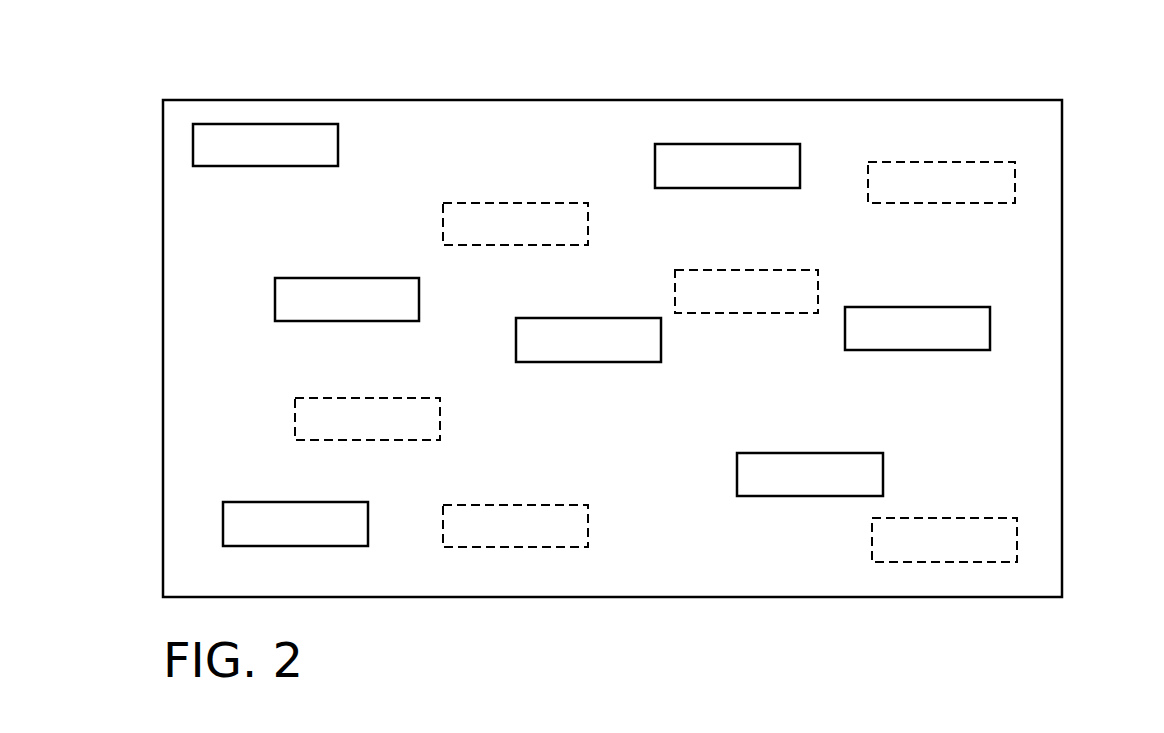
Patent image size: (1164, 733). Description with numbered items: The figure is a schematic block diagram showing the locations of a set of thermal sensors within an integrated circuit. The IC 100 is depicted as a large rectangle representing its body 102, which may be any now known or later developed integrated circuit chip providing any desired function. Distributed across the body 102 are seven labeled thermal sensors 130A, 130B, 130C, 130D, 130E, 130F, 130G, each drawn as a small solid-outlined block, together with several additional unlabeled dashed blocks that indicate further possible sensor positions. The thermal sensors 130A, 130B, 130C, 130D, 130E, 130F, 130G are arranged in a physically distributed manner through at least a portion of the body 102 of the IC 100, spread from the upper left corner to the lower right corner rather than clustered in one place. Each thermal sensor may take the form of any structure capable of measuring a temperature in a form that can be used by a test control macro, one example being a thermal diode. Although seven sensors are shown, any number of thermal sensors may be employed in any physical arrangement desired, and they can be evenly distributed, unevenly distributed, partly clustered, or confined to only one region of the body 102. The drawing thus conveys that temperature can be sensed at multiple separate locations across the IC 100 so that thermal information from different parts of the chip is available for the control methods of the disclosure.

The IC 100 is at (1072, 100).
The body 102 is at (1026, 145).
The thermal sensor 130A is at (296, 158).
The thermal sensor 130B is at (759, 179).
The thermal sensor 130C is at (375, 313).
The thermal sensor 130D is at (619, 354).
The thermal sensor 130E is at (888, 342).
The thermal sensor 130F is at (267, 538).
The thermal sensor 130G is at (841, 488).